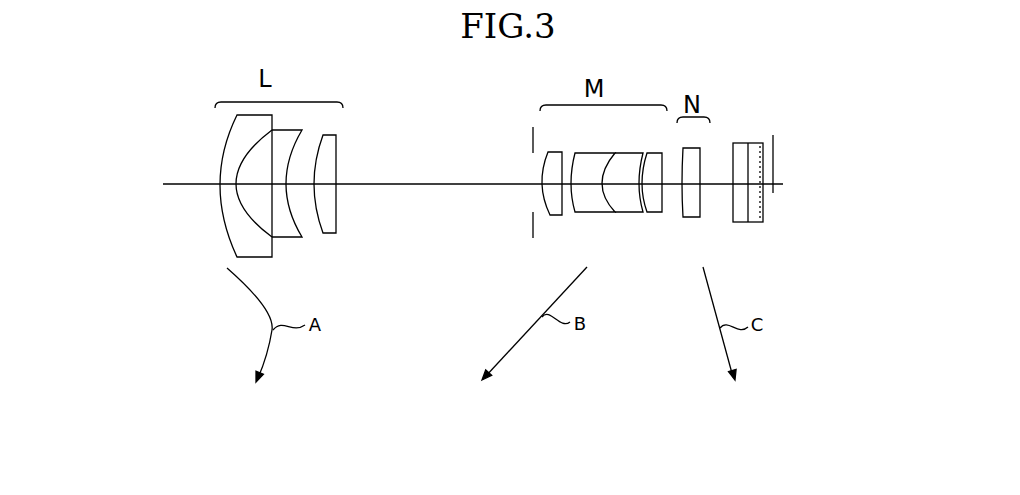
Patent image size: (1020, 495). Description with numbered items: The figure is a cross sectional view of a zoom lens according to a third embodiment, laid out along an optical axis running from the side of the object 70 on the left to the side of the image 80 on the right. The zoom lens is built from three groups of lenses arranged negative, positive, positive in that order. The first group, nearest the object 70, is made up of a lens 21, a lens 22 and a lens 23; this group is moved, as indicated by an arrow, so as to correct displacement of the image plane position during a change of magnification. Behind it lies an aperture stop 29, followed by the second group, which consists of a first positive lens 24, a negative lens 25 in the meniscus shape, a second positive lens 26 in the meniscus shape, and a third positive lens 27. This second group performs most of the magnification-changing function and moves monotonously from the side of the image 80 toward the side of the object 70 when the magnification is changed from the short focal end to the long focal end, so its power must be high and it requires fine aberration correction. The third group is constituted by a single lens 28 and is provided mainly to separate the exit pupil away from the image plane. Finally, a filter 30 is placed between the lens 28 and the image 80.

The lens 21 is at (235, 243).
The lens 22 is at (282, 237).
The lens 23 is at (328, 233).
The first positive lens 24 is at (553, 215).
The negative lens 25 is at (597, 212).
The second positive lens 26 is at (632, 212).
The third positive lens 27 is at (653, 212).
The lens 28 is at (693, 217).
The aperture stop 29 is at (532, 235).
The filter 30 is at (780, 227).
The object 70 is at (132, 187).
The image 80 is at (840, 166).